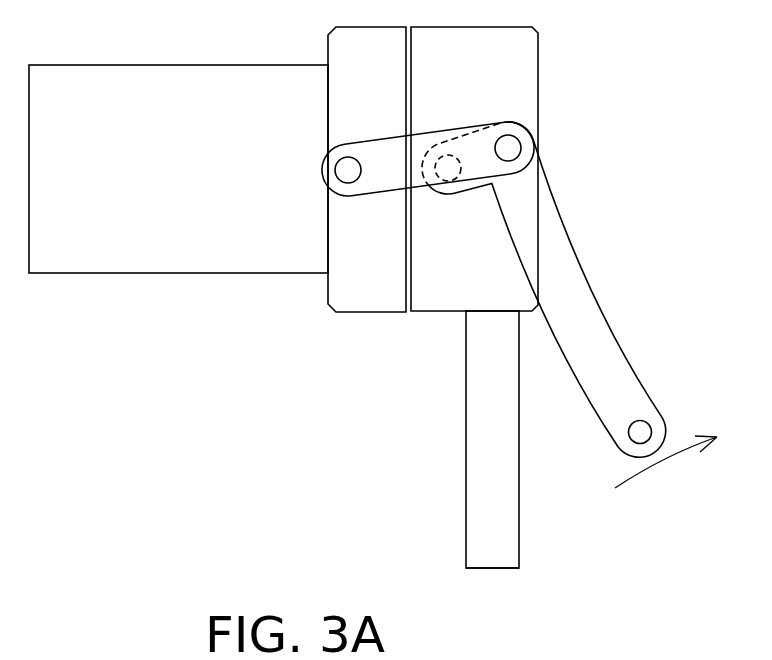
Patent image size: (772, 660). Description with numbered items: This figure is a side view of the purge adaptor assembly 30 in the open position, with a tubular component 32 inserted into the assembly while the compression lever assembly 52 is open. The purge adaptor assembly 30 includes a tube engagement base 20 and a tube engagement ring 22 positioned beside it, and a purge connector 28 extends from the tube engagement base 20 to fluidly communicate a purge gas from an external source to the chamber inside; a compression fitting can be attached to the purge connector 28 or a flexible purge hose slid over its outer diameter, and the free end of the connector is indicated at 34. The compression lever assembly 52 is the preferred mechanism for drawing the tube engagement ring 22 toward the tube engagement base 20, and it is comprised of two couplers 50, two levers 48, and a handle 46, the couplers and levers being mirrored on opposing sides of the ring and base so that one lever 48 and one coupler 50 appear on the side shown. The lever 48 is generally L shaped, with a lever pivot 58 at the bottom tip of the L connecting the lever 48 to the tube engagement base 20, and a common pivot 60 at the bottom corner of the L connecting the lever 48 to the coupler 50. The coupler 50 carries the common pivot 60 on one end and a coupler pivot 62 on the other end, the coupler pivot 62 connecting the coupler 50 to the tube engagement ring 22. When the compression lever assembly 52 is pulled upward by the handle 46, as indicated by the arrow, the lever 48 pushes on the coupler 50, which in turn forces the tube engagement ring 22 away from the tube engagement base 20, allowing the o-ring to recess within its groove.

The tube engagement base 20 is at (538, 110).
The tube engagement ring 22 is at (368, 298).
The purge connector 28 is at (470, 490).
The purge adaptor assembly 30 is at (498, 216).
The tubular component 32 is at (155, 265).
The shaft end 34 is at (485, 573).
The handle 46 is at (633, 433).
The lever 48 is at (603, 342).
The coupler 50 is at (423, 140).
The compression lever assembly 52 is at (601, 276).
The lever pivot 58 is at (448, 181).
The common pivot 60 is at (521, 148).
The coupler pivot 62 is at (335, 172).